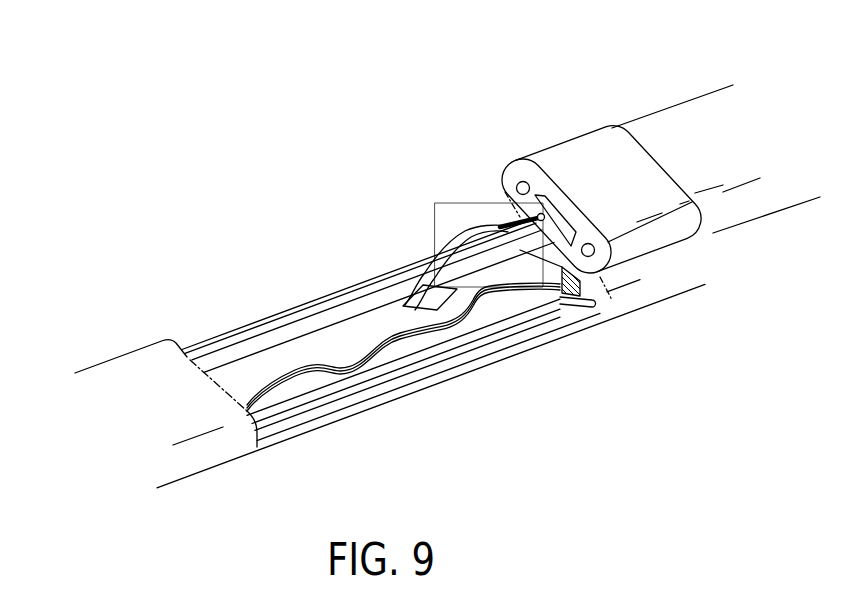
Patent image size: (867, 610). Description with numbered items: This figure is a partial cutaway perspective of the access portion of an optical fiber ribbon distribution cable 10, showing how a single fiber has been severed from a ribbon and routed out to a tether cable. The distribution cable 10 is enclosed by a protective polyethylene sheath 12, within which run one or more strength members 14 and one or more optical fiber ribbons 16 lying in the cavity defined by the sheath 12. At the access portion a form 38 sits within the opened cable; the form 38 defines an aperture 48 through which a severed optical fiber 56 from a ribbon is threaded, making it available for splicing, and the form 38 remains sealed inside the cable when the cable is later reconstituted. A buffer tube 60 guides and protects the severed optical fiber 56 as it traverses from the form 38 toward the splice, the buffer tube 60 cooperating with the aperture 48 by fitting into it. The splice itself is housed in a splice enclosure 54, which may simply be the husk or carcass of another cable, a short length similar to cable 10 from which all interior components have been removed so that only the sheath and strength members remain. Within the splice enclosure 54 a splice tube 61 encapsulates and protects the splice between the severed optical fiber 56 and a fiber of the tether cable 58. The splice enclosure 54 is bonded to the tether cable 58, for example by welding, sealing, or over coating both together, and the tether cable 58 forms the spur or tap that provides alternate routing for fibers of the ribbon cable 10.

The optical fiber ribbon distribution cable 10 is at (150, 374).
The sheath 12 is at (357, 417).
The strength member 14 is at (217, 346).
The optical fiber ribbon 16 is at (505, 318).
The form 38 is at (316, 338).
The aperture 48 is at (461, 310).
The splice enclosure 54 is at (597, 142).
The severed optical fiber 56 is at (502, 222).
The tether cable 58 is at (677, 117).
The buffer tube 60 is at (457, 234).
The splice tube 61 is at (561, 211).